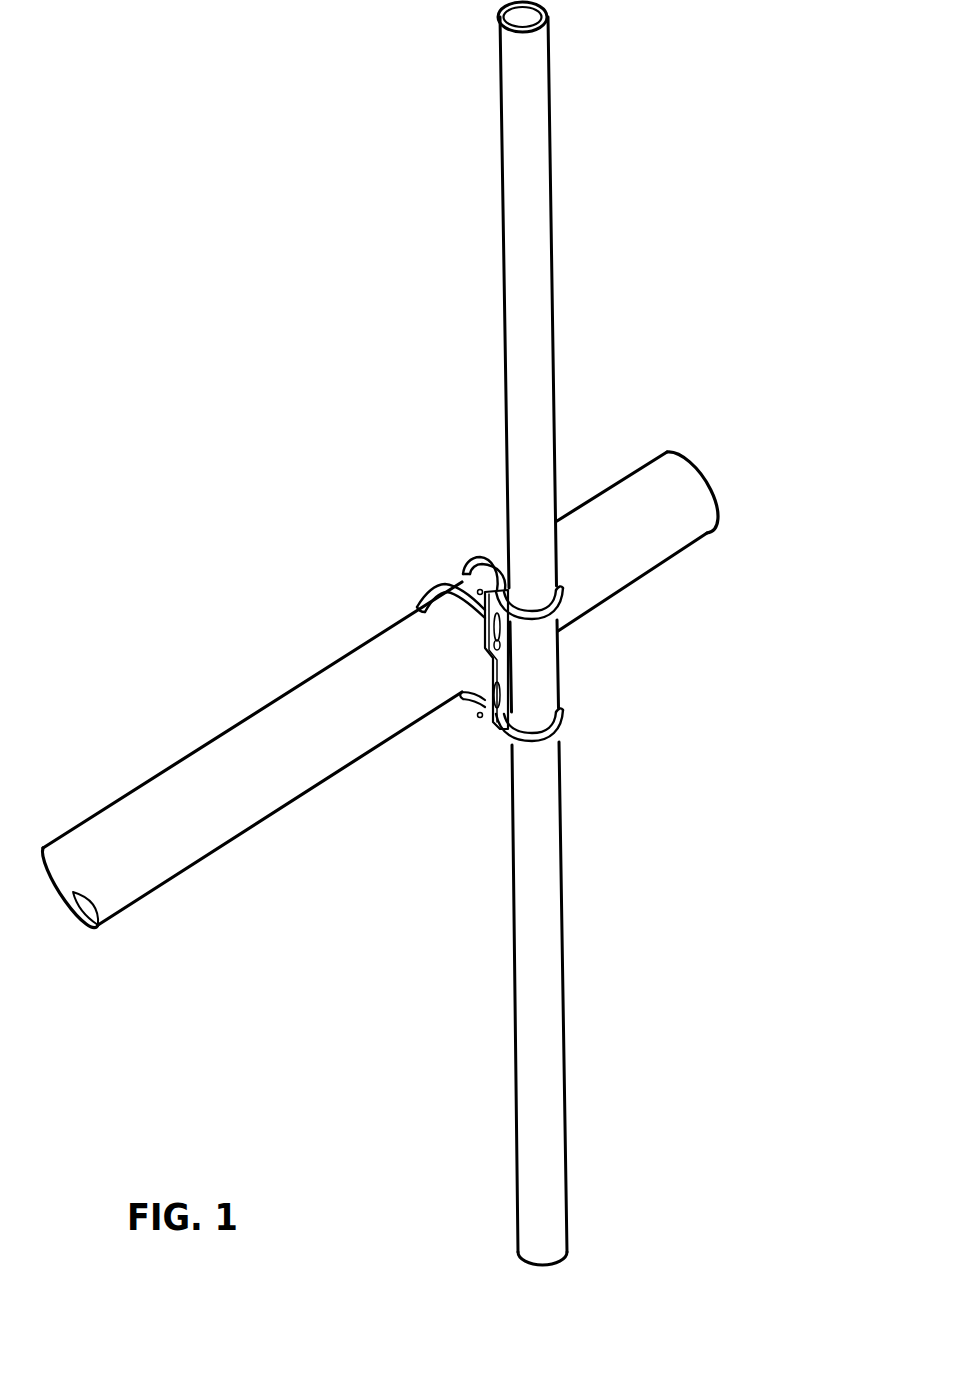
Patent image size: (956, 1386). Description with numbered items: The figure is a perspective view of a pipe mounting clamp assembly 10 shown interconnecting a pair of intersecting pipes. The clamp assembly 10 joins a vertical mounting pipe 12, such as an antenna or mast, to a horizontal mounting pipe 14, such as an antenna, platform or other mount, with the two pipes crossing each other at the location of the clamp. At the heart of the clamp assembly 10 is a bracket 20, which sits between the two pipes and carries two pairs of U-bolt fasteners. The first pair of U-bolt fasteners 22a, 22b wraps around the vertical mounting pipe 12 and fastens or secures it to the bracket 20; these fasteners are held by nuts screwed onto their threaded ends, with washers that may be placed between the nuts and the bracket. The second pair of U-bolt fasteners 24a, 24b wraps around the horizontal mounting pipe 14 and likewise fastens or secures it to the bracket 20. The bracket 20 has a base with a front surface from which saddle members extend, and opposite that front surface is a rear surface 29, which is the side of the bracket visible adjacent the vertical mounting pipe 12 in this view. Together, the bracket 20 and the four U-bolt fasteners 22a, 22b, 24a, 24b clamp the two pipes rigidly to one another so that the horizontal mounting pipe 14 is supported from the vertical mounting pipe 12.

The pipe mounting clamp assembly 10 is at (492, 718).
The vertical mounting pipe 12 is at (542, 1010).
The horizontal mounting pipe 14 is at (697, 503).
The bracket 20 is at (503, 670).
The U-bolt fastener 22a is at (563, 729).
The U-bolt fastener 22b is at (566, 596).
The U-bolt fastener 24a is at (432, 587).
The U-bolt fastener 24b is at (479, 558).
The rear surface 29 is at (507, 645).